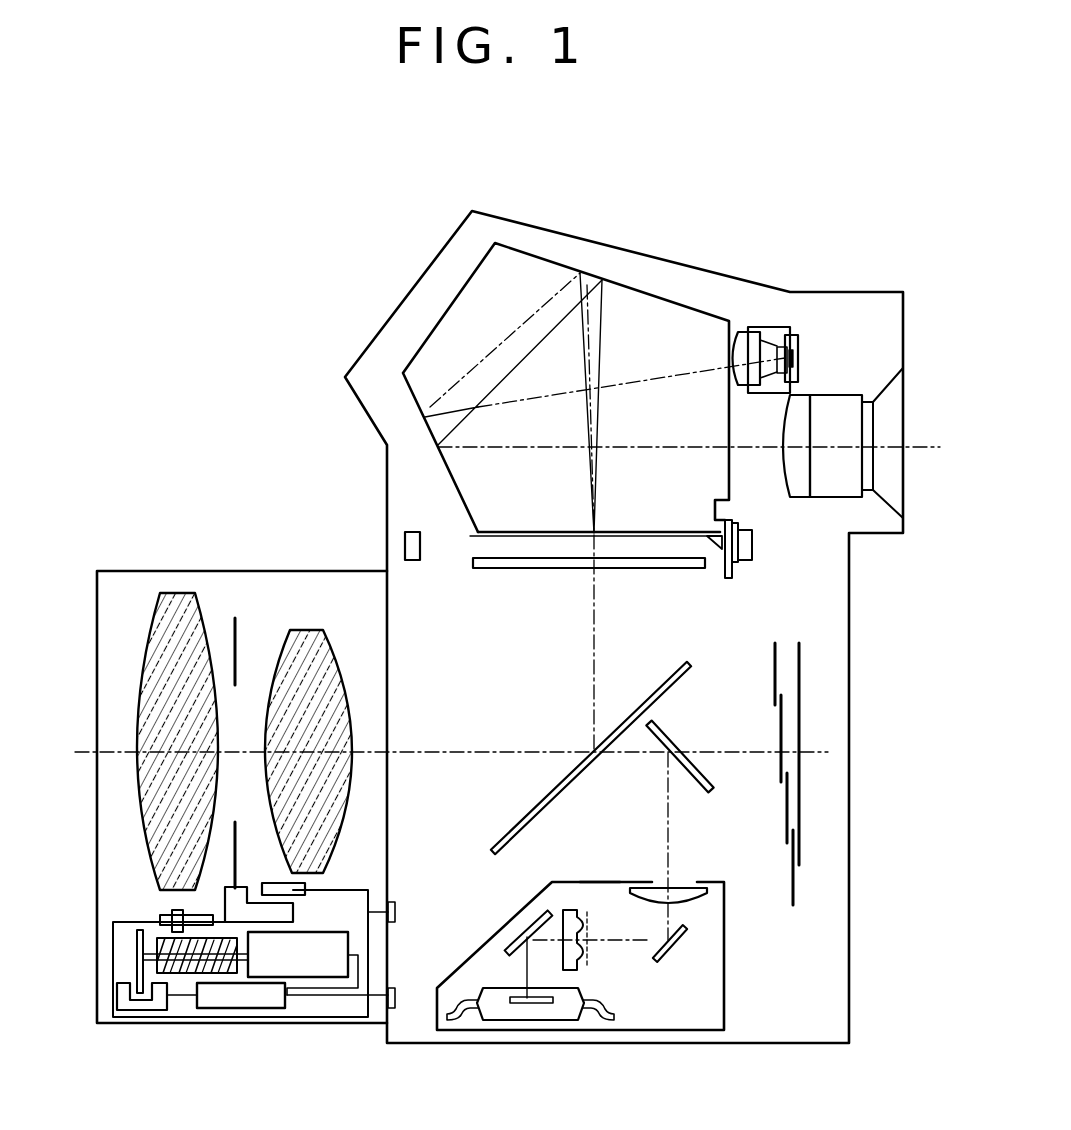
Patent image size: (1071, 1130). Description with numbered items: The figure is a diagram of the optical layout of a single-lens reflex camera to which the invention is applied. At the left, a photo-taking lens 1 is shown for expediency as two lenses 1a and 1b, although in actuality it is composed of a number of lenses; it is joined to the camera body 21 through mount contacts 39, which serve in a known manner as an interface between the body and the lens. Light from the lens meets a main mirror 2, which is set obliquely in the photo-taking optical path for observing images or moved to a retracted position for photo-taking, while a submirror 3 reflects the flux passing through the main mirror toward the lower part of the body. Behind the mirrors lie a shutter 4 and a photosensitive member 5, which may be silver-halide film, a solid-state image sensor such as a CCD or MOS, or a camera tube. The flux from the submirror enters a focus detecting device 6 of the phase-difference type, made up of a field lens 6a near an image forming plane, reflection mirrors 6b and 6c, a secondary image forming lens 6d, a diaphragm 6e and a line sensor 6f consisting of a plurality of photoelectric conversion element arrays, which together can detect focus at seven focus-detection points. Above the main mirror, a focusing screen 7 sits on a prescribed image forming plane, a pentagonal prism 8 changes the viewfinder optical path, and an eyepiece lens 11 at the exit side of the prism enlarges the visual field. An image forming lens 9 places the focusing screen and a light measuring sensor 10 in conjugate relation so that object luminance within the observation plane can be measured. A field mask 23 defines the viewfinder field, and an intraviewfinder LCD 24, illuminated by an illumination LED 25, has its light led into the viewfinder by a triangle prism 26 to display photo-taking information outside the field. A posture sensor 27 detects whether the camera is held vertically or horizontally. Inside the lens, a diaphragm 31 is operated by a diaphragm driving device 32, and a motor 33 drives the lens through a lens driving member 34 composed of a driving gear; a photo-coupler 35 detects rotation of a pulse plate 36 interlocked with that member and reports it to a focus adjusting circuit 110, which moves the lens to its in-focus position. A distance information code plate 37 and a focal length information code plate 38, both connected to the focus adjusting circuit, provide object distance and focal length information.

The photo-taking lens 1 is at (242, 730).
The lens 1a is at (168, 640).
The lens 1b is at (321, 751).
The main mirror 2 is at (553, 803).
The submirror 3 is at (715, 791).
The shutter 4 is at (775, 670).
The photosensitive member 5 is at (800, 820).
The focus detecting device 6 is at (725, 1003).
The field lens 6a is at (707, 892).
The reflection mirror 6b is at (688, 942).
The reflection mirror 6c is at (513, 933).
The secondary image forming lens 6d is at (576, 932).
The diaphragm 6e is at (598, 888).
The line sensor 6f is at (553, 1000).
The focusing screen 7 is at (647, 564).
The pentagonal prism 8 is at (458, 330).
The image forming lens 9 is at (742, 340).
The light measuring sensor 10 is at (797, 337).
The eyepiece lens 11 is at (793, 475).
The camera body 21 is at (363, 413).
The field mask 23 is at (485, 537).
The intraviewfinder LCD 24 is at (733, 572).
The illumination LED 25 is at (747, 543).
The triangle prism 26 is at (715, 551).
The posture sensor 27 is at (405, 540).
The diaphragm 31 is at (240, 850).
The diaphragm driving device 32 is at (293, 903).
The motor 33 is at (323, 970).
The lens driving member 34 is at (158, 917).
The photo-coupler 35 is at (160, 1003).
The pulse plate 36 is at (137, 970).
The distance information code plate 37 is at (157, 930).
The focal length information code plate 38 is at (297, 881).
The mount contacts 39 is at (405, 910).
The focus adjusting circuit 110 is at (242, 997).